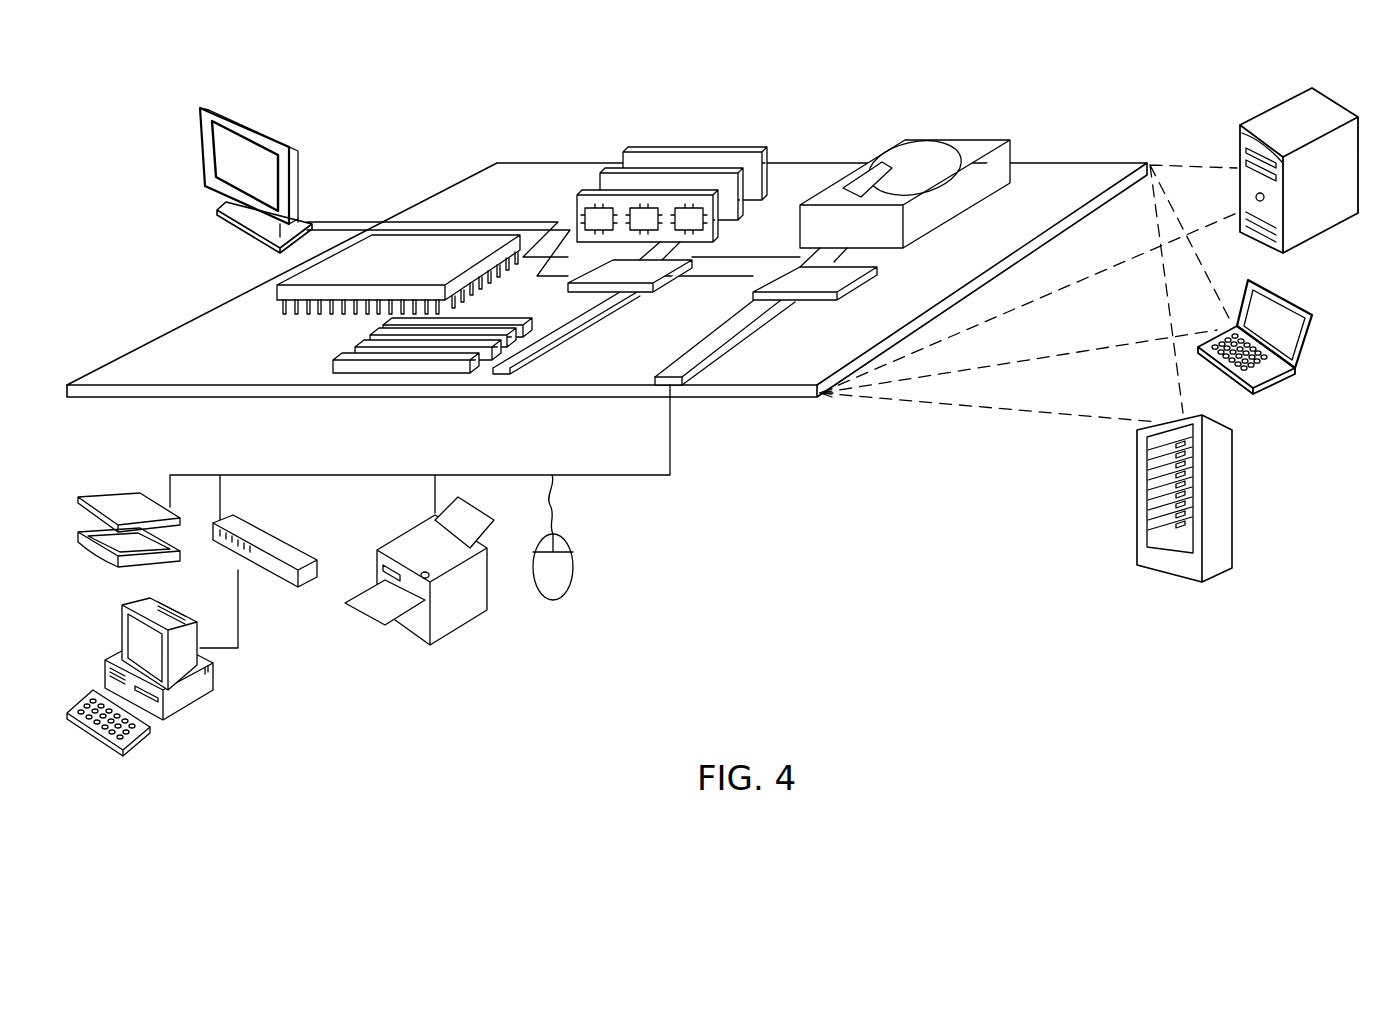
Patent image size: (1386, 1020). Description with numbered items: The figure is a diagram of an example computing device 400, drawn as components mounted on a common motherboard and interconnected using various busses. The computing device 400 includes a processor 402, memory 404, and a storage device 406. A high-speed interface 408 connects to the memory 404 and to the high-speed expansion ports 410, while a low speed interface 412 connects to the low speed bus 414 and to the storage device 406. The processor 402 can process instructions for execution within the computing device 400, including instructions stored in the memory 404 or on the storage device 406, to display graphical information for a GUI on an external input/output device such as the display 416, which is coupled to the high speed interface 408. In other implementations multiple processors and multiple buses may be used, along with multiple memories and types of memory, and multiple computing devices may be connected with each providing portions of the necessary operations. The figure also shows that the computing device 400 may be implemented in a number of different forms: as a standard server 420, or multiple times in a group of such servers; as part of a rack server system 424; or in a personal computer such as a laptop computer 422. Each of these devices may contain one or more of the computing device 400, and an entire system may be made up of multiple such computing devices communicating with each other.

The computing device 400 is at (418, 135).
The processor 402 is at (280, 289).
The memory 404 is at (632, 150).
The storage device 406 is at (900, 143).
The high-speed interface 408 is at (600, 272).
The high-speed expansion ports 410 is at (362, 352).
The low speed interface 412 is at (793, 278).
The low speed bus 414 is at (690, 392).
The display 416 is at (207, 105).
The standard server 420 is at (1240, 148).
The laptop computer 422 is at (1312, 312).
The rack server system 424 is at (1137, 527).